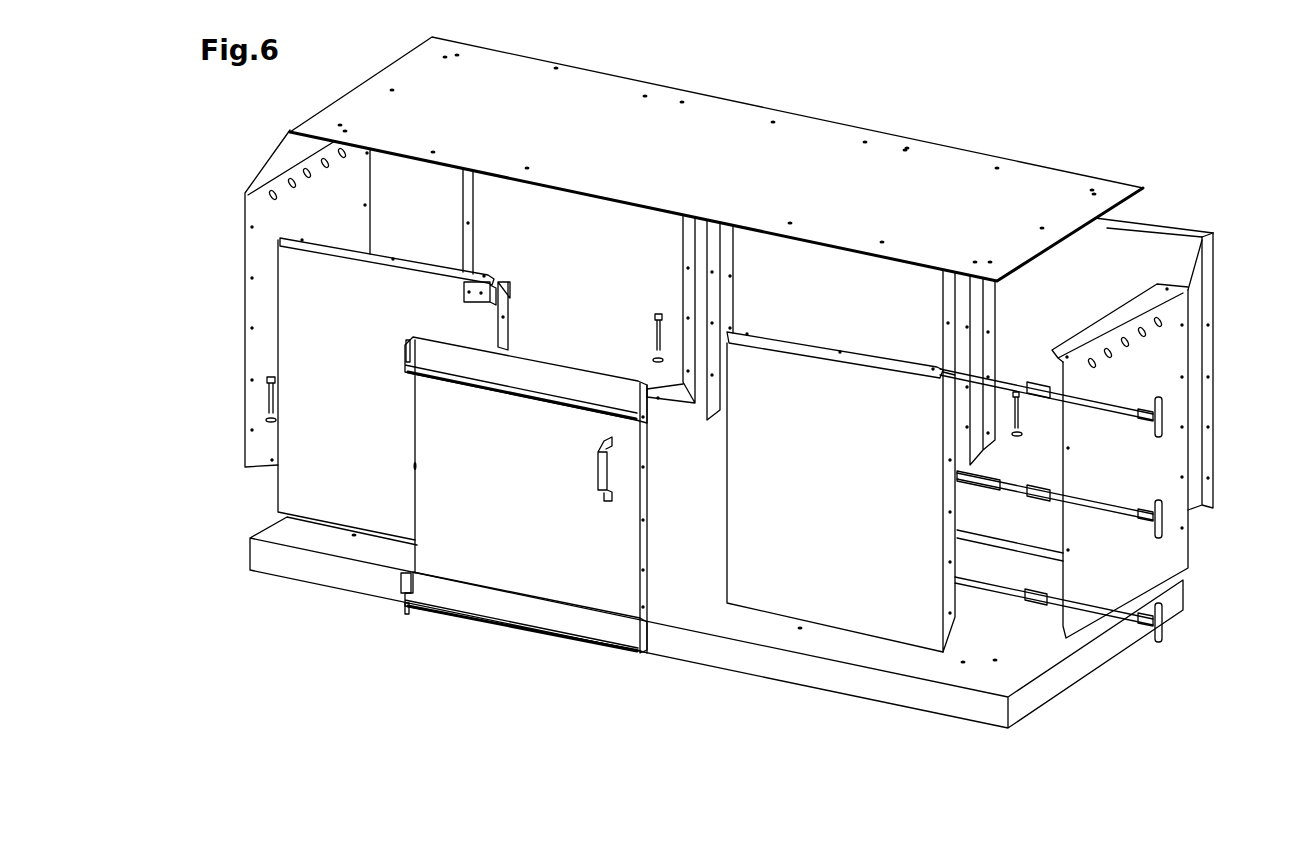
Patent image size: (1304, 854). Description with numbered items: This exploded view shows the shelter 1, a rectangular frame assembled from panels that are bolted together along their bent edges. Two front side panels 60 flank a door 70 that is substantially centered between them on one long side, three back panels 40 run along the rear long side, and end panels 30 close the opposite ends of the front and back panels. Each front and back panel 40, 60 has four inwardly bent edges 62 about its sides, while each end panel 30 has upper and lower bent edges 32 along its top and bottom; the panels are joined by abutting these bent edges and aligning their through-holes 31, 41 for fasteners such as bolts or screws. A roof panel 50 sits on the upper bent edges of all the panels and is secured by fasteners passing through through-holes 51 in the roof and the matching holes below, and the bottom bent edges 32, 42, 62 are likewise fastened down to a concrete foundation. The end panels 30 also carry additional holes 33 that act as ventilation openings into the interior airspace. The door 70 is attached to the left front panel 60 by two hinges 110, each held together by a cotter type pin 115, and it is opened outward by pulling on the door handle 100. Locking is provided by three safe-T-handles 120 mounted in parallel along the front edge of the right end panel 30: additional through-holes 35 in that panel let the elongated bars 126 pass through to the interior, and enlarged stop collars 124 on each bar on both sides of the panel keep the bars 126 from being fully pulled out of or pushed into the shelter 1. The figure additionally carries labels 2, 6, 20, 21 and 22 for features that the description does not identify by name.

The shelter 1 is at (1047, 692).
The side wall 2 is at (1163, 318).
The rear panel 6 is at (890, 630).
The door rail 20 is at (463, 607).
The bolt 21 is at (658, 315).
The rear post 22 is at (968, 290).
The end panel 30 is at (715, 373).
The through-hole 31 is at (1117, 322).
The bent edge 32 is at (1085, 340).
The hole 33 is at (1125, 343).
The through-hole 35 is at (1114, 505).
The back panel 40 is at (548, 220).
The through-hole 41 is at (1192, 235).
The bottom bent edge 42 is at (1210, 263).
The roof panel 50 is at (716, 142).
The through-hole 51 is at (645, 95).
The front side panel 60 is at (305, 460).
The inwardly bent edge 62 is at (363, 250).
The door 70 is at (594, 539).
The door handle 100 is at (612, 472).
The hinge 110 is at (463, 290).
The cotter type pin 115 is at (407, 348).
The safe-T-handle 120 is at (1163, 428).
The enlarged stop collar 124 is at (1140, 517).
The elongated bar 126 is at (970, 482).